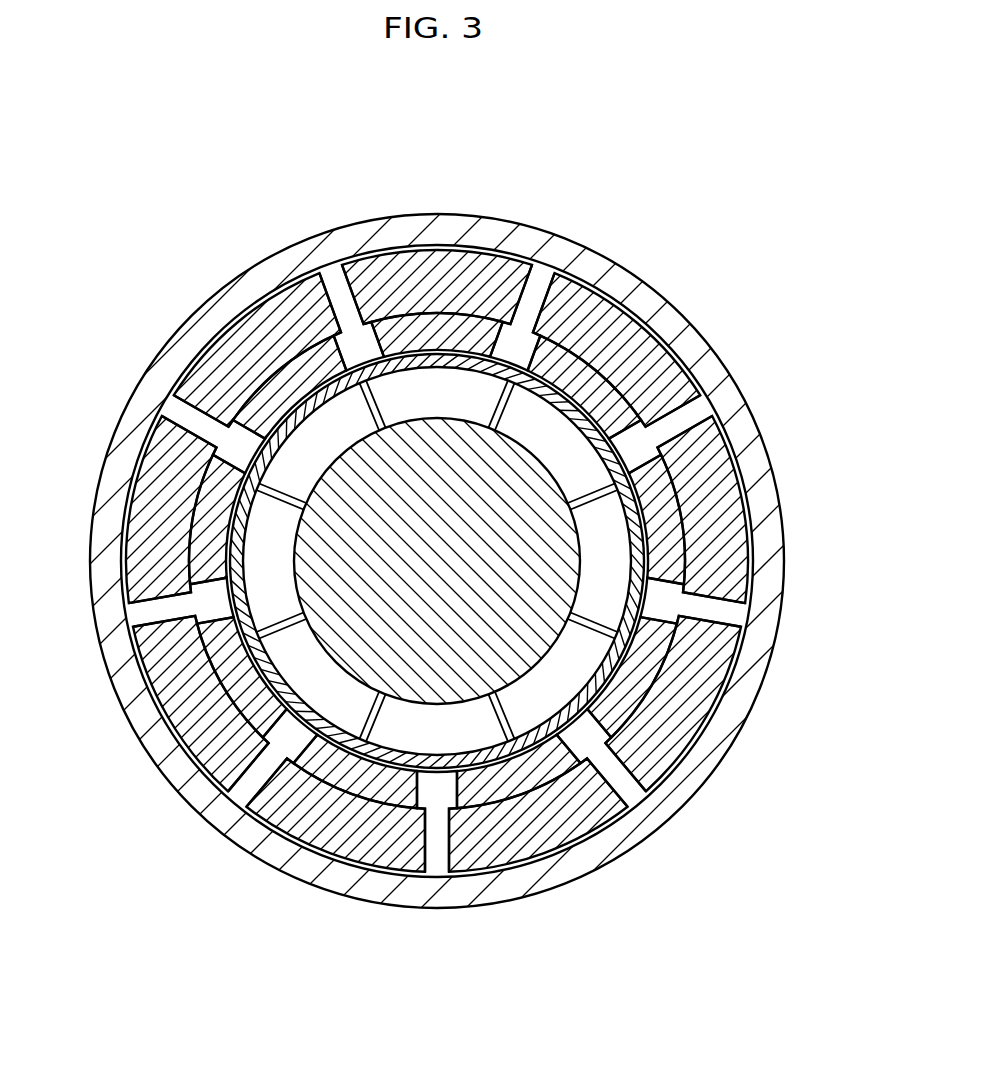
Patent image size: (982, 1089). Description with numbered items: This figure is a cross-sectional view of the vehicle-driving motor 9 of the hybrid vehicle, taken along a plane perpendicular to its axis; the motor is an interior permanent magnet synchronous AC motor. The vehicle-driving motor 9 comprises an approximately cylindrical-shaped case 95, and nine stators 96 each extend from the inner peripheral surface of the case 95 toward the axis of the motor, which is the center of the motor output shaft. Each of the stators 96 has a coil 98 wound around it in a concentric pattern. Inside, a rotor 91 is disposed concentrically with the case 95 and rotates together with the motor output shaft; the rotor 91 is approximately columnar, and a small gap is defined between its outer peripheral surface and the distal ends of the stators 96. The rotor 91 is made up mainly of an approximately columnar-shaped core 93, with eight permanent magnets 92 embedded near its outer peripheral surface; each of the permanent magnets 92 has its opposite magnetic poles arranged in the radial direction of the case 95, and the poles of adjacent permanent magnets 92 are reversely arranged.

The vehicle-driving motor 9 is at (163, 162).
The rotor 91 is at (440, 562).
The permanent magnets 92 is at (300, 540).
The core 93 is at (722, 386).
The case 95 is at (417, 214).
The stators 96 is at (529, 345).
The coil 98 is at (357, 253).